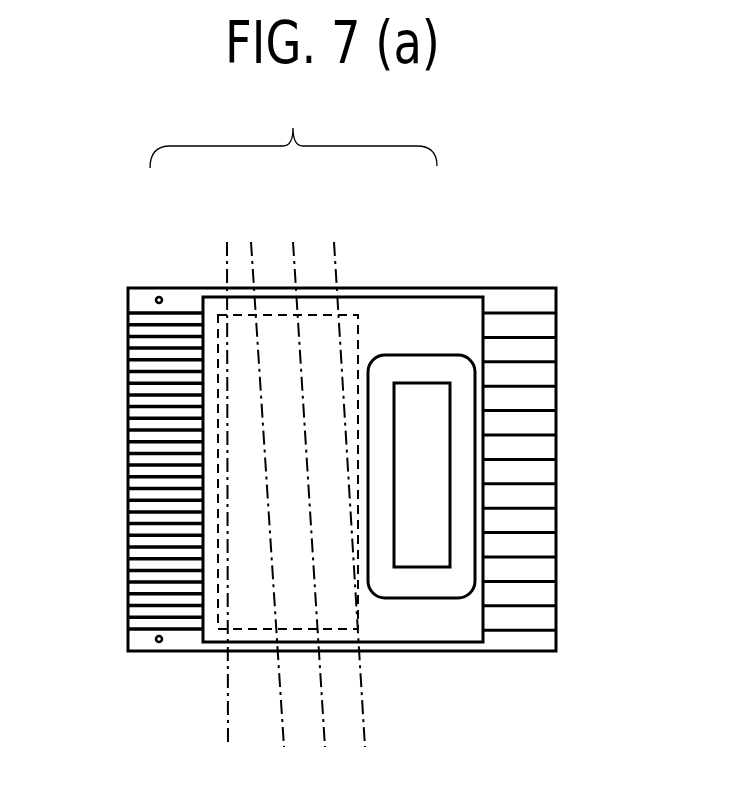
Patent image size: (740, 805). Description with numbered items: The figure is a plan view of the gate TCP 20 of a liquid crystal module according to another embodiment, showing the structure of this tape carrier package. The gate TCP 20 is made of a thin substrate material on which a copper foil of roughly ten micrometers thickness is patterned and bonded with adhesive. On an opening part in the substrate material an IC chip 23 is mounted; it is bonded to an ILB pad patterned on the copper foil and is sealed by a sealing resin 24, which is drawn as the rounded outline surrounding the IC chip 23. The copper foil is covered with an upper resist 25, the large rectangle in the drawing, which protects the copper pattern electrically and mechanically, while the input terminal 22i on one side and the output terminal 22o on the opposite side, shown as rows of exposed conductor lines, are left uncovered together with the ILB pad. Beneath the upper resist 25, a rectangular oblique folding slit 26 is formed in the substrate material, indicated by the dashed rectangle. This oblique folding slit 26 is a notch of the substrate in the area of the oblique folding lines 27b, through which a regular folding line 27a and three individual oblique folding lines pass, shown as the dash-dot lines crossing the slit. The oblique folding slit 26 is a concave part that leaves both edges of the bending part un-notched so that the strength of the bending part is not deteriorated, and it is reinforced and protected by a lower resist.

The gate TCP 20 is at (498, 196).
The output terminal 22o is at (142, 464).
The input terminal 22i is at (545, 297).
The IC chip 23 is at (444, 470).
The sealing resin 24 is at (458, 578).
The upper resist 25 is at (212, 634).
The oblique folding slit 26 is at (230, 568).
The regular folding line 27a is at (224, 254).
The oblique folding lines 27b is at (293, 420).